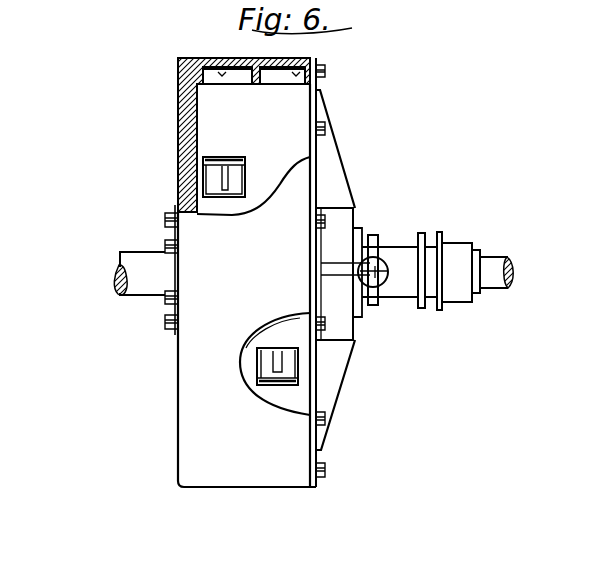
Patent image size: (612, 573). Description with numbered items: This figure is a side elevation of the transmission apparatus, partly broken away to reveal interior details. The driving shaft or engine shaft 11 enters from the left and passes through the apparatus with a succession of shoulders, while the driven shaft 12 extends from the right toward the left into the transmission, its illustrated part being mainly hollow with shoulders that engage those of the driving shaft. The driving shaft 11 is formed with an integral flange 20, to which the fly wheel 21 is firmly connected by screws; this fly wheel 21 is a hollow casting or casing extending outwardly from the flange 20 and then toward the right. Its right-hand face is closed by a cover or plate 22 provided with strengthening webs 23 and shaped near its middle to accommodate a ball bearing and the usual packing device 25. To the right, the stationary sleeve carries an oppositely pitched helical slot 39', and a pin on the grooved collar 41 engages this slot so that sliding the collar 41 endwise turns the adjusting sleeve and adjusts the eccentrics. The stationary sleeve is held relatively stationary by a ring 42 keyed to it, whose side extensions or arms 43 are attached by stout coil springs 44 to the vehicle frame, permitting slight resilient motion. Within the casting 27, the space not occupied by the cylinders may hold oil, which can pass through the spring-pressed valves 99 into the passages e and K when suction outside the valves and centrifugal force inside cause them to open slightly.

The oil passage e is at (221, 72).
The oil passage K is at (300, 72).
The driving shaft 11 is at (146, 263).
The driven shaft 12 is at (504, 257).
The flange 20 is at (168, 310).
The fly wheel 21 is at (180, 394).
The cover plate 22 is at (321, 367).
The strengthening webs 23 is at (343, 149).
The packing device 25 is at (362, 312).
The casting 27 is at (213, 113).
The helical slot 39' is at (474, 252).
The grooved collar 41 is at (441, 232).
The ring 42 is at (374, 237).
The side extensions or arms 43 is at (372, 269).
The coil springs 44 is at (382, 258).
The spring-pressed valves 99 is at (212, 171).